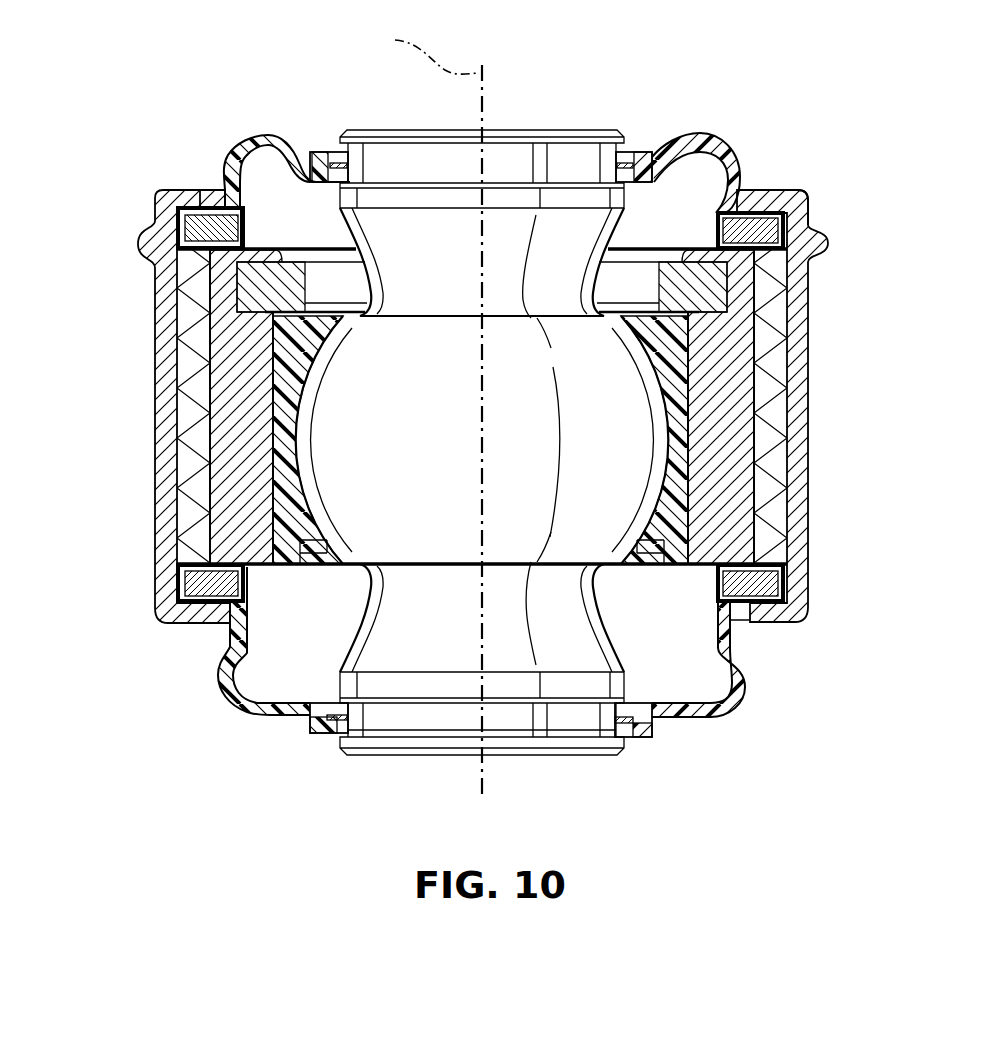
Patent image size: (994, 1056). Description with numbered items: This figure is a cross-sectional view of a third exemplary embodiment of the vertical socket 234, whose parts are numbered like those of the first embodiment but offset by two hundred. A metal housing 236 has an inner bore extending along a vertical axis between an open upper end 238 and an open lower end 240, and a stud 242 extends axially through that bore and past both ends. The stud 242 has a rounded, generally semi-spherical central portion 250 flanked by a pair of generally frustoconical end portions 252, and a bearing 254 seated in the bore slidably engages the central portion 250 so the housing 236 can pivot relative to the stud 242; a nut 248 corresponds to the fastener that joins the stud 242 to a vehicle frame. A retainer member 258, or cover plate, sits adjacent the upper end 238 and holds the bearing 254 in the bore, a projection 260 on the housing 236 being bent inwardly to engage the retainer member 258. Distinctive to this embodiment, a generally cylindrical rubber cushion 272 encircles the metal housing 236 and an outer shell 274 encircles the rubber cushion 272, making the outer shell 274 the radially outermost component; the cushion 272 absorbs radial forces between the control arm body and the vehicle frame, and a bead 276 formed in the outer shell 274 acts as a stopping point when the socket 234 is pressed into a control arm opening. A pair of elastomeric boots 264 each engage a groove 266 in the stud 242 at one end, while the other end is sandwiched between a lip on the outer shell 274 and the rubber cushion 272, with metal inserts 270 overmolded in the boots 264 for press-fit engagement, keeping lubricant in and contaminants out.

The vertical socket 234 is at (821, 167).
The metal housing 236 is at (753, 455).
The open upper end 238 is at (748, 238).
The open lower end 240 is at (260, 628).
The stud 242 is at (670, 496).
The nut 248 is at (643, 550).
The rounded central portion 250 is at (670, 395).
The frustoconical end portions 252 is at (566, 232).
The bearing 254 is at (696, 340).
The retainer member 258 is at (233, 289).
The projection 260 is at (258, 252).
The boots 264 is at (700, 141).
The groove 266 is at (633, 150).
The metal inserts 270 is at (313, 152).
The rubber cushion 272 is at (185, 523).
The outer shell 274 is at (152, 412).
The bead 276 is at (143, 245).